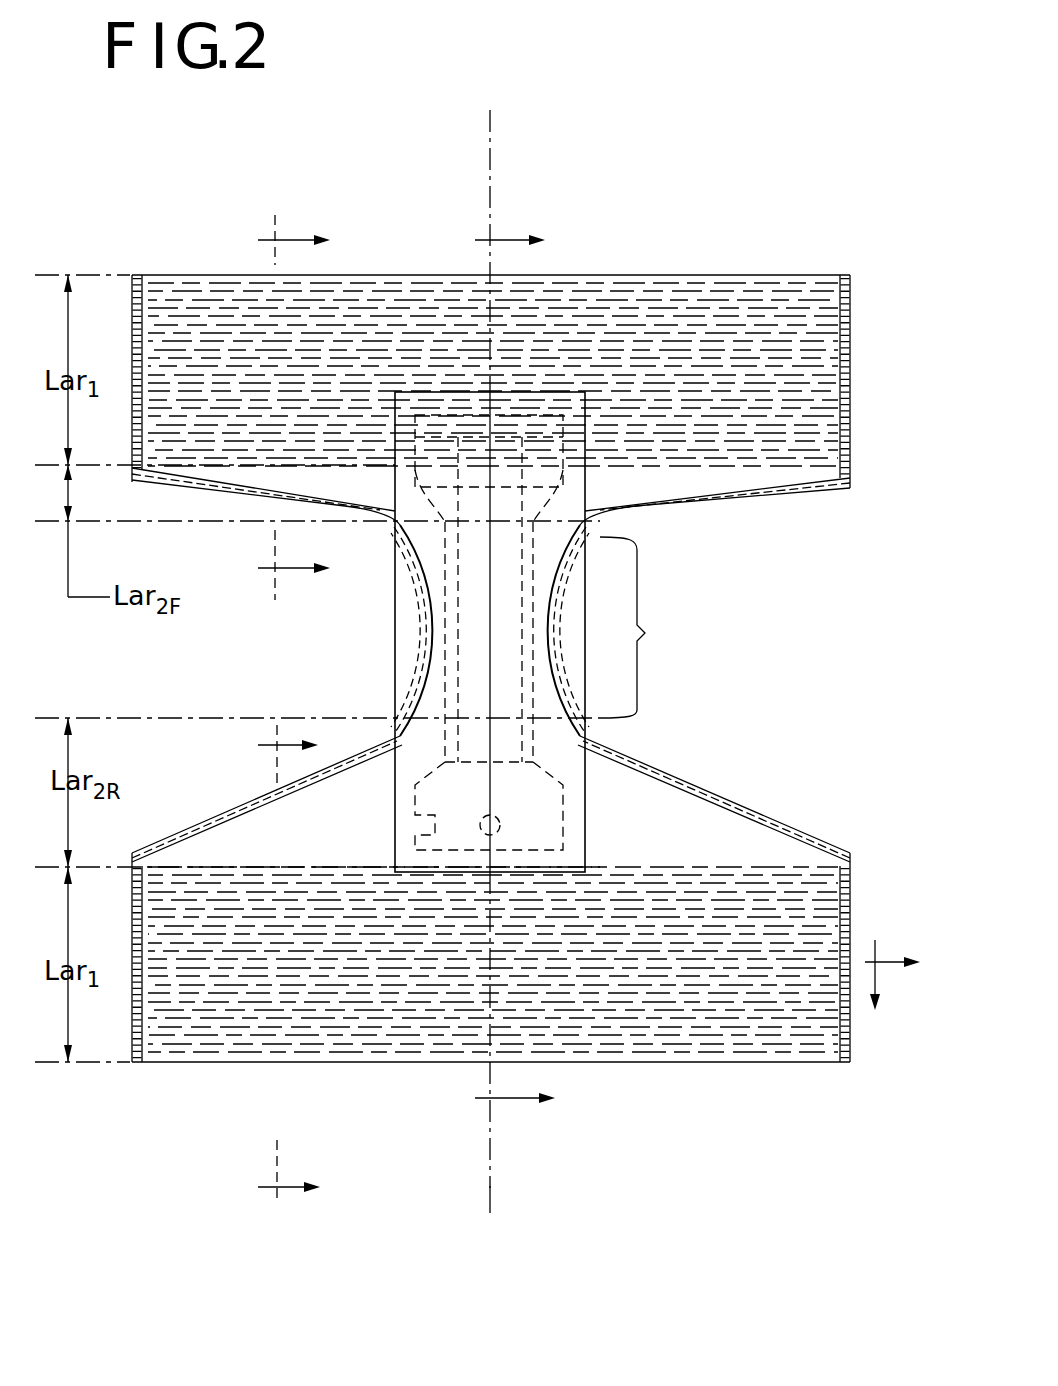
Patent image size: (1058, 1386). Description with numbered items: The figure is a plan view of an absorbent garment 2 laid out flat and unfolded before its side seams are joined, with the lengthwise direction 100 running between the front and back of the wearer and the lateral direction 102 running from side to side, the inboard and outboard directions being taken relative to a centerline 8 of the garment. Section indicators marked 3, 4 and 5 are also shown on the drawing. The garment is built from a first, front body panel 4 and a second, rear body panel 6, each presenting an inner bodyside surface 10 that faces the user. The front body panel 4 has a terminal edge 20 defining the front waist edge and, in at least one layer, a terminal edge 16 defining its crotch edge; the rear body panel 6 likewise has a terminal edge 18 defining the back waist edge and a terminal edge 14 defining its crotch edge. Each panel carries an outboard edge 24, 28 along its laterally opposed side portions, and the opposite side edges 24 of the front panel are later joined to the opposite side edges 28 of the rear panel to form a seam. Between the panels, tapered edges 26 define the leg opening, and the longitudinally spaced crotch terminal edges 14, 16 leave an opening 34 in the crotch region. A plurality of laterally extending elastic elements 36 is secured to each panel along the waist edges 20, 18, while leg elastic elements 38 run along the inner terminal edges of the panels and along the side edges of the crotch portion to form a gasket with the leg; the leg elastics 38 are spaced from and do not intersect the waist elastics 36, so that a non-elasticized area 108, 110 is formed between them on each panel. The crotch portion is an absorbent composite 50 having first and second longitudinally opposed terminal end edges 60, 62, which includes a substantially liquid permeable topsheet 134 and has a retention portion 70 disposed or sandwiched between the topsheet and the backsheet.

The absorbent garment 2 is at (343, 228).
The section line 3 is at (512, 667).
The front body panel 4 is at (307, 527).
The section line 5 is at (287, 968).
The rear body panel 6 is at (240, 840).
The centerline 8 is at (487, 130).
The bodyside surface 10 is at (210, 462).
The terminal edge 14 is at (469, 717).
The terminal edge 16 is at (550, 562).
The terminal edge 18 is at (402, 1063).
The terminal edge 20 is at (200, 275).
The outboard edge 24 is at (851, 406).
The tapered edges 26 is at (245, 487).
The outboard edge 28 is at (130, 967).
The opening 34 is at (642, 627).
The laterally extending elastic elements 36 is at (379, 297).
The leg elastic elements 38 is at (185, 476).
The absorbent composite 50 is at (432, 560).
The terminal end edge 60 is at (568, 392).
The terminal end edge 62 is at (548, 875).
The retention portion 70 is at (565, 803).
The lengthwise direction 100 is at (885, 990).
The lateral direction 102 is at (897, 946).
The non-elasticized area 108 is at (650, 810).
The non-elasticized area 110 is at (682, 481).
The topsheet 134 is at (413, 763).